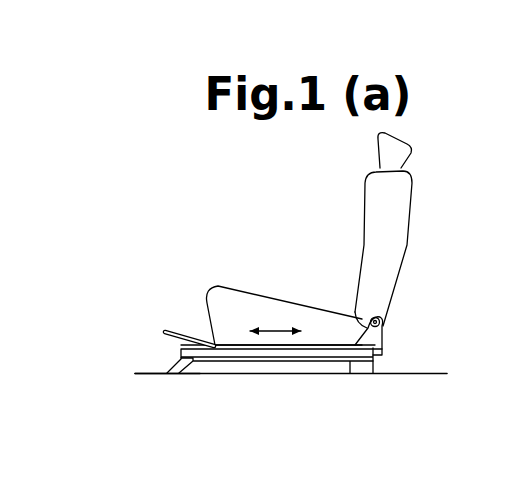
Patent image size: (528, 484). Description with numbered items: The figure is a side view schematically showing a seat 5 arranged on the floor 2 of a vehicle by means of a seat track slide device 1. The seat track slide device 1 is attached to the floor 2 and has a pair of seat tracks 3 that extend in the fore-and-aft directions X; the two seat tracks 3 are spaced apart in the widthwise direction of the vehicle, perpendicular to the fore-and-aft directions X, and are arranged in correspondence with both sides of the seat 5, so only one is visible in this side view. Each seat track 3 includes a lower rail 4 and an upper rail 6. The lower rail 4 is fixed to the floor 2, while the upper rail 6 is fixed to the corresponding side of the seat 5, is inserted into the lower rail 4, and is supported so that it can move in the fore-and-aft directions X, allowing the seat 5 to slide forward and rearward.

The seat track slide device 1 is at (176, 349).
The floor 2 is at (141, 372).
The seat track 3 is at (247, 362).
The lower rail 4 is at (285, 358).
The seat 5 is at (332, 315).
The upper rail 6 is at (383, 348).
The fore-and-aft directions X is at (277, 330).